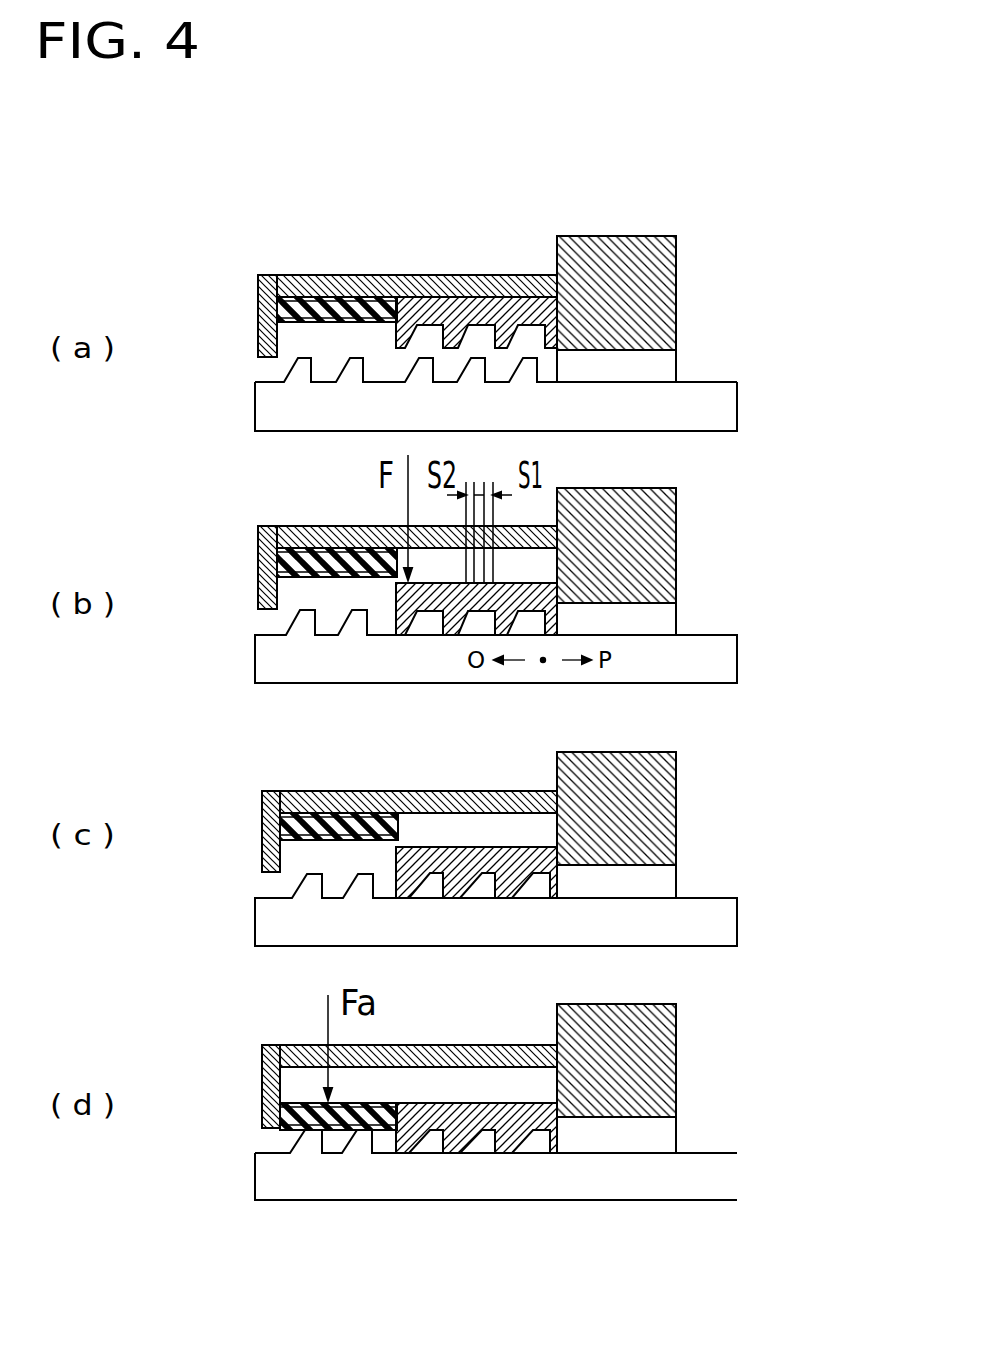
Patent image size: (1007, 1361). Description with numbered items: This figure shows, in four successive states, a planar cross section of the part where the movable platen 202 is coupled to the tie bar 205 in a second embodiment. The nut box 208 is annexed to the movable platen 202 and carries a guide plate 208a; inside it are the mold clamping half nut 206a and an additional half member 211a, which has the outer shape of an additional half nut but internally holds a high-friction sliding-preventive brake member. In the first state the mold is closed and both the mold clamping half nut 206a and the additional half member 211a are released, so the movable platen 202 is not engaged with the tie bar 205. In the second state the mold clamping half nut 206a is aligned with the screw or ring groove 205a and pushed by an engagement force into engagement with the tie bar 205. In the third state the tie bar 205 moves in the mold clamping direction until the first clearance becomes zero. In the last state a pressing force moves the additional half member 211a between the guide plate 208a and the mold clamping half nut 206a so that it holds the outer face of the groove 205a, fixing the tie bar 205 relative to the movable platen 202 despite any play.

The movable platen 202 is at (630, 298).
The tie bar 205 is at (688, 408).
The screw or ring groove of the tie bar 205a is at (348, 373).
The mold clamping half nut 206a is at (505, 285).
The nut box 208 is at (432, 293).
The guide plate 208a is at (258, 298).
The additional half member 211a is at (347, 303).